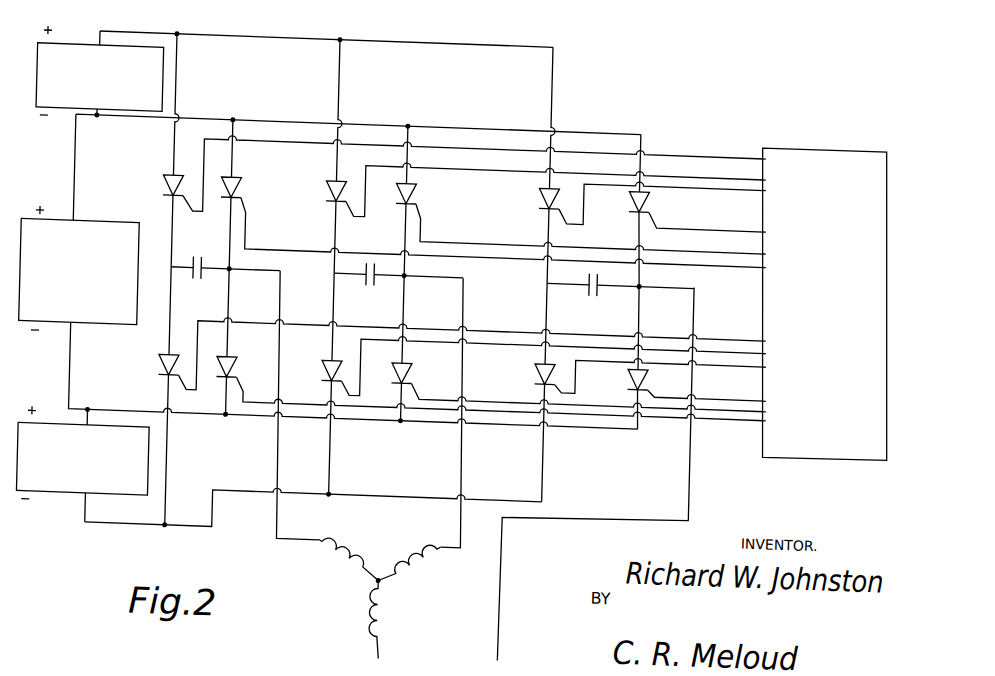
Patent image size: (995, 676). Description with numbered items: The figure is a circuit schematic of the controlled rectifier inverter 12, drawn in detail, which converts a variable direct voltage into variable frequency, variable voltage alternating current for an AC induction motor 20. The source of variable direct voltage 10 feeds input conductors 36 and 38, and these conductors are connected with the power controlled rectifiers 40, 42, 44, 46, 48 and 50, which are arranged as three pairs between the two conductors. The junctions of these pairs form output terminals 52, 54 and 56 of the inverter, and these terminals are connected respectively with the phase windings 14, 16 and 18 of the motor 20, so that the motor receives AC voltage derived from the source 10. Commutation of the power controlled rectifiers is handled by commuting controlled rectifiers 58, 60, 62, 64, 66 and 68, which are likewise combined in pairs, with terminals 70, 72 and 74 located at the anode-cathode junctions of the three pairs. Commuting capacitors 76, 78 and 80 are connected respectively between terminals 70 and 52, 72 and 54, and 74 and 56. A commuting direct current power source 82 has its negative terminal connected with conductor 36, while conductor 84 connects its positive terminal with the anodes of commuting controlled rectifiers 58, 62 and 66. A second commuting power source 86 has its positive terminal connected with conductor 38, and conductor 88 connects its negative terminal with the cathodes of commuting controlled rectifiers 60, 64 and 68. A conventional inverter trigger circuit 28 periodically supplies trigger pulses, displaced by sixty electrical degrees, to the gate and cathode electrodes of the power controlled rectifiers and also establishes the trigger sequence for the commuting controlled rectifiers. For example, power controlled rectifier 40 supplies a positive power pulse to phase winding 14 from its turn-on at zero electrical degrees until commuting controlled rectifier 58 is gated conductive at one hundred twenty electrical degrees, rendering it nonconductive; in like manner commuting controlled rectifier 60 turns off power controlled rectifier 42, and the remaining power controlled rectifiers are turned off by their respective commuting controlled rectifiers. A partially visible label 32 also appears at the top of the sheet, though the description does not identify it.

The source of variable direct voltage 10 is at (104, 199).
The inverter 12 is at (587, 92).
The phase winding 14 is at (380, 548).
The phase winding 16 is at (440, 554).
The phase winding 18 is at (405, 617).
The AC induction motor 20 is at (364, 581).
The inverter trigger circuit 28 is at (807, 122).
The inverter output 32 is at (517, 7).
The input conductor 36 is at (148, 116).
The input conductor 38 is at (111, 408).
The power controlled rectifier 40 is at (247, 176).
The power controlled rectifier 42 is at (263, 355).
The power controlled rectifier 44 is at (420, 176).
The power controlled rectifier 46 is at (416, 354).
The power controlled rectifier 48 is at (653, 182).
The power controlled rectifier 50 is at (648, 353).
The output terminal 52 is at (236, 265).
The output terminal 54 is at (411, 265).
The output terminal 56 is at (654, 269).
The commuting controlled rectifier 58 is at (170, 184).
The commuting controlled rectifier 60 is at (175, 362).
The commuting controlled rectifier 62 is at (336, 180).
The commuting controlled rectifier 64 is at (336, 358).
The commuting controlled rectifier 66 is at (547, 181).
The commuting controlled rectifier 68 is at (539, 348).
The terminal 70 is at (174, 267).
The terminal 72 is at (337, 265).
The terminal 74 is at (552, 266).
The commuting capacitor 76 is at (201, 275).
The commuting capacitor 78 is at (374, 274).
The commuting capacitor 80 is at (598, 272).
The commuting direct current power source 82 is at (88, 43).
The conductor 84 is at (232, 28).
The commuting power source 86 is at (52, 492).
The conductor 88 is at (202, 524).